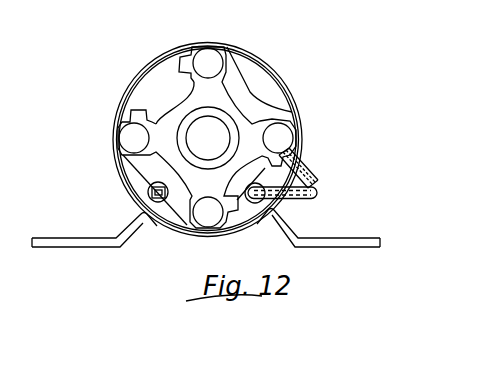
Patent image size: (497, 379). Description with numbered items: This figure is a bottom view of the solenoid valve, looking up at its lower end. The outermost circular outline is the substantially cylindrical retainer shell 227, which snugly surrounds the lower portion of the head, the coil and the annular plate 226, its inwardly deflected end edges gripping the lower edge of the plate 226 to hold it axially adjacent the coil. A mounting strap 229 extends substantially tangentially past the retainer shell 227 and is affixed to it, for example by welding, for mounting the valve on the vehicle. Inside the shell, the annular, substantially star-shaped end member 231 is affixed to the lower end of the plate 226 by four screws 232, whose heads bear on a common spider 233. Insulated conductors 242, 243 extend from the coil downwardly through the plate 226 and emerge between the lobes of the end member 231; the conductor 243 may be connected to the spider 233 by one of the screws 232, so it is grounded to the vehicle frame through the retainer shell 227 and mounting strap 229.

The retainer shell 227 is at (280, 78).
The annular plate 226 is at (272, 100).
The end member 231 is at (158, 103).
The screws 232 is at (125, 138).
The spider 233 is at (183, 112).
The insulated conductor 242 is at (150, 188).
The insulated conductor 243 is at (318, 195).
The mounting strap 229 is at (82, 240).